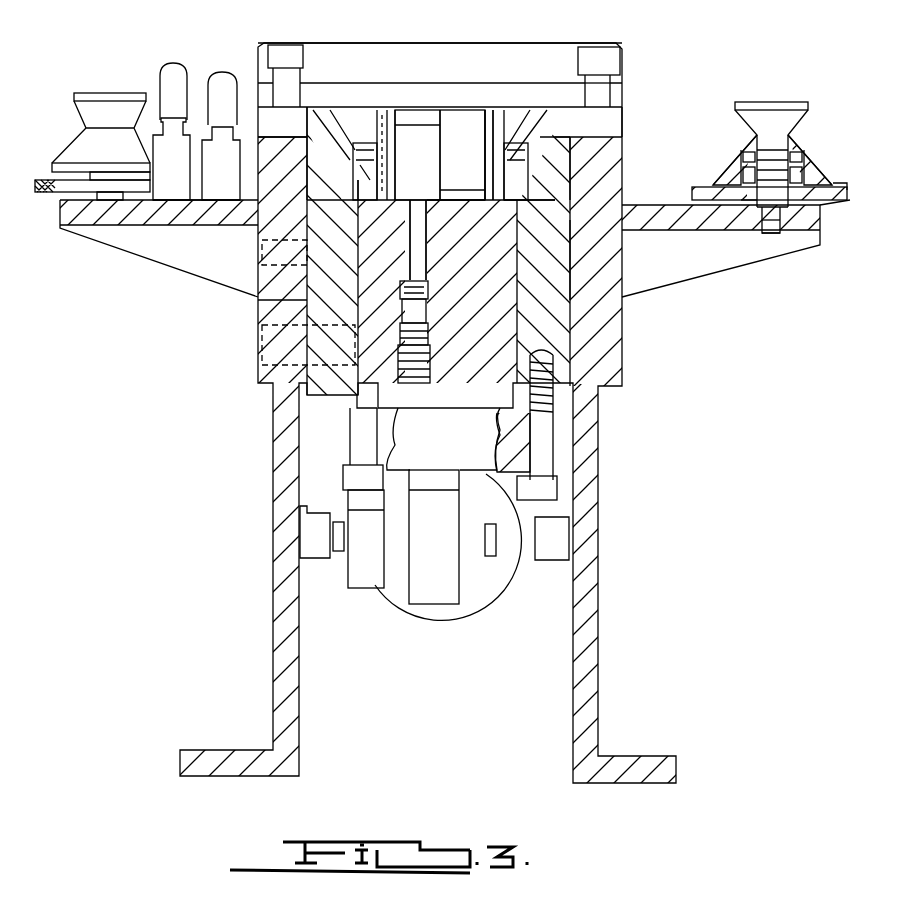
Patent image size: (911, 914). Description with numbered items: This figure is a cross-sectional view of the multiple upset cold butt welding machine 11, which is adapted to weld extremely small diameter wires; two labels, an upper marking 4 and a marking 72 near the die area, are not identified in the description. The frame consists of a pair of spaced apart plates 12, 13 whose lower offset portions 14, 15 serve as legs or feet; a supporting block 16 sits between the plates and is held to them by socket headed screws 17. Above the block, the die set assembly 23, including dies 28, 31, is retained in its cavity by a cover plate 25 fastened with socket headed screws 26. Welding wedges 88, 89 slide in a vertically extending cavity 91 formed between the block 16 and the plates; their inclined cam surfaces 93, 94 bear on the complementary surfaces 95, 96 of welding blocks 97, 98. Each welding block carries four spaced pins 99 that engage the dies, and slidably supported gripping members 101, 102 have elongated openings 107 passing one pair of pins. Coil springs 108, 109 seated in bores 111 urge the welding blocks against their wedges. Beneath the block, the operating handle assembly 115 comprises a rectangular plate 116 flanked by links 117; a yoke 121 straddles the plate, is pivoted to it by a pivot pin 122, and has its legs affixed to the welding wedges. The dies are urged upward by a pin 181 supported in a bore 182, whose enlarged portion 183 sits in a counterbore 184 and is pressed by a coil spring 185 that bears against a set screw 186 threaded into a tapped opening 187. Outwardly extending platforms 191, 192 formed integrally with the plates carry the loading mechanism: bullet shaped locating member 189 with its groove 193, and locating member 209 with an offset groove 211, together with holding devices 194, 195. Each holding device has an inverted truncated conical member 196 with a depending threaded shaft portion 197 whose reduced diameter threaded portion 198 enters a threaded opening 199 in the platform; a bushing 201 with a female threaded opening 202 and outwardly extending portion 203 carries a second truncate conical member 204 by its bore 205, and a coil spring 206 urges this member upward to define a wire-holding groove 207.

The spindle assembly 4 is at (386, 89).
The multiple upset cold butt welding machine 11 is at (651, 149).
The plate 12 is at (262, 366).
The plate 13 is at (622, 360).
The offset portion 14 is at (205, 750).
The offset portion 15 is at (632, 757).
The supporting block 16 is at (516, 316).
The socket headed screw 17 is at (262, 344).
The die set assembly 23 is at (460, 118).
The cover plate 25 is at (540, 50).
The socket headed screw 26 is at (292, 48).
The die 28 is at (459, 117).
The die 31 is at (497, 124).
The bearing seat 72 is at (530, 200).
The welding wedge 88 is at (298, 310).
The welding wedge 89 is at (568, 279).
The vertically extending cavity 91 is at (310, 205).
The inclined cam surface 93 is at (322, 110).
The inclined cam surface 94 is at (622, 100).
The complementary surface 95 is at (372, 105).
The complementary surface 96 is at (570, 178).
The welding block 97 is at (340, 200).
The welding block 98 is at (576, 190).
The pin 99 is at (384, 98).
The gripping member 101 is at (440, 155).
The gripping member 102 is at (463, 155).
The elongated opening 107 is at (417, 128).
The coil spring 108 is at (352, 172).
The coil spring 109 is at (463, 174).
The bore 111 is at (320, 160).
The operating handle assembly 115 is at (378, 636).
The plate 116 is at (446, 604).
The link 117 is at (560, 170).
The yoke 121 is at (480, 588).
The pivot pin 122 is at (558, 492).
The pin 181 is at (427, 264).
The bore 182 is at (436, 205).
The enlarged portion 183 is at (430, 290).
The counterbore 184 is at (428, 313).
The coil spring 185 is at (430, 339).
The set screw 186 is at (432, 361).
The tapped opening 187 is at (424, 410).
The locating member 189 is at (223, 84).
The platform 191 is at (822, 238).
The platform 192 is at (100, 224).
The groove 193 is at (230, 145).
The holding device 194 is at (777, 94).
The holding device 195 is at (130, 89).
The inverted truncated conical shaped member 196 is at (782, 118).
The threaded shaft portion 197 is at (802, 140).
The reduced diameter threaded portion 198 is at (772, 236).
The threaded opening 199 is at (764, 236).
The bushing 201 is at (834, 186).
The female threaded opening 202 is at (748, 142).
The outwardly extending portion 203 is at (830, 200).
The truncate conical shaped member 204 is at (742, 156).
The bore 205 is at (742, 174).
The coil spring 206 is at (741, 204).
The groove 207 is at (803, 160).
The locating member 209 is at (175, 72).
The groove 211 is at (178, 127).